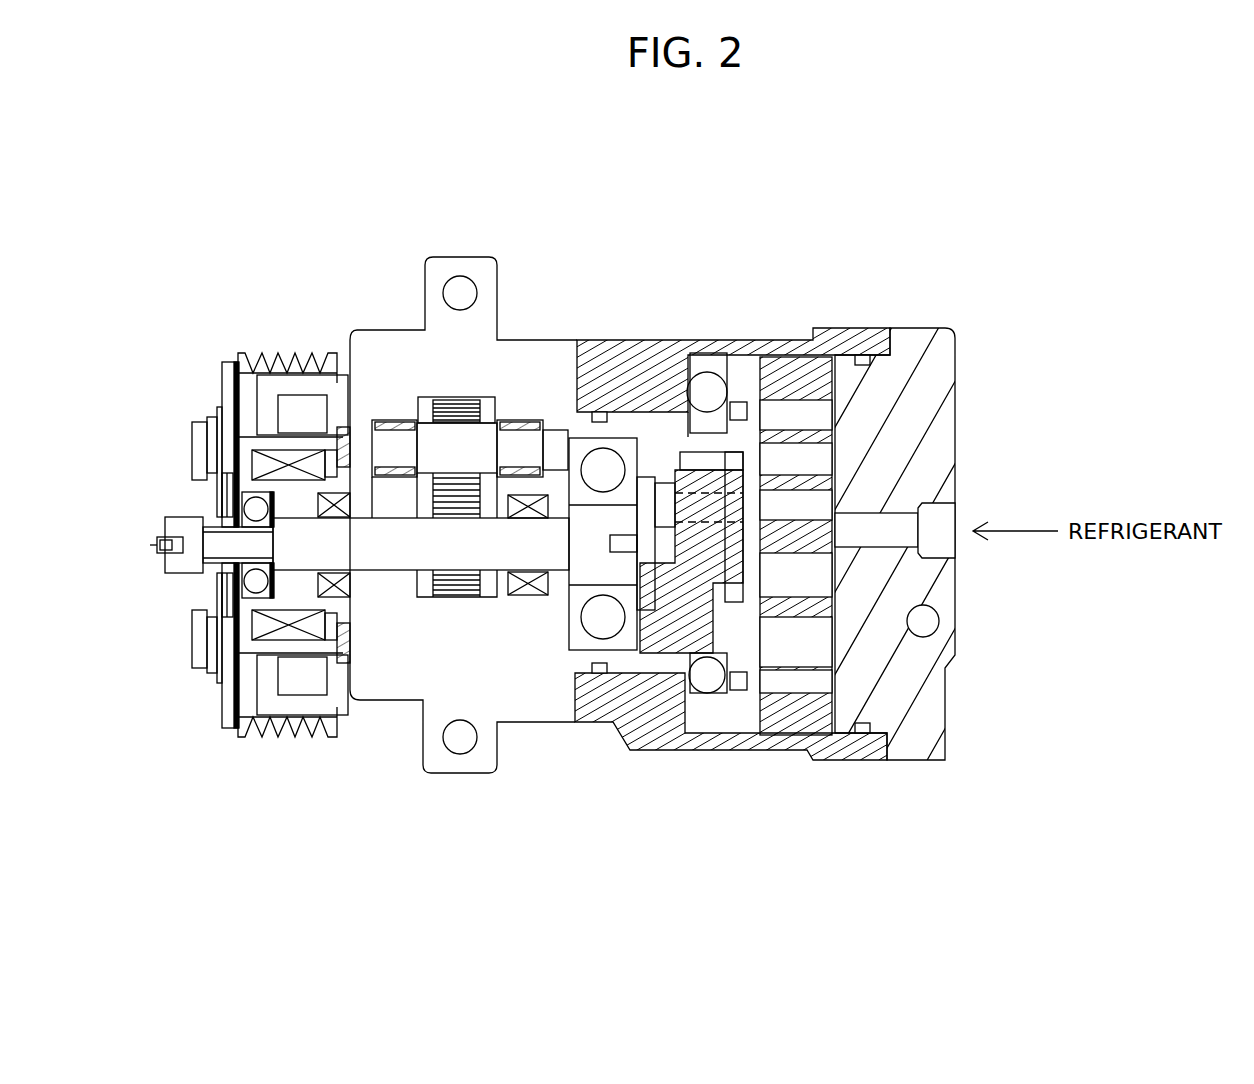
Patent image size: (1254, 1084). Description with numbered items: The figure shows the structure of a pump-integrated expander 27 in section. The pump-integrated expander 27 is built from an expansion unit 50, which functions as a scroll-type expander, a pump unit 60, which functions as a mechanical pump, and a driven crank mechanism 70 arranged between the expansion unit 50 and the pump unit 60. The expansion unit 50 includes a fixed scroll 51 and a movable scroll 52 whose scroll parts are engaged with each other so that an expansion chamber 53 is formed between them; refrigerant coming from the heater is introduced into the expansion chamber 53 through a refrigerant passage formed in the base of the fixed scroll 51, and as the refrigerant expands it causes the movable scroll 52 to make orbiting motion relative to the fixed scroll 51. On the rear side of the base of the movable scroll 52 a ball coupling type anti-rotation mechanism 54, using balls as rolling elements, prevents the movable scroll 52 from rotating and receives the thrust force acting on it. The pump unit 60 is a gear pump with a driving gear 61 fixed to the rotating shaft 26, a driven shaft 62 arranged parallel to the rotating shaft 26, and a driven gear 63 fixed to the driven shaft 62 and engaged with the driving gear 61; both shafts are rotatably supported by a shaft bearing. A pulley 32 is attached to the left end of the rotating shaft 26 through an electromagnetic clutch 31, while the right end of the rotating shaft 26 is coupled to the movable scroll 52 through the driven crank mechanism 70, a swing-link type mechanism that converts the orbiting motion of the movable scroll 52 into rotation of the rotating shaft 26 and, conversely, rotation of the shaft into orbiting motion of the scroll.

The pump-integrated expander 27 is at (745, 188).
The rotating shaft 26 is at (387, 550).
The electromagnetic clutch 31 is at (250, 577).
The pulley 32 is at (300, 737).
The expansion unit 50 is at (863, 245).
The fixed scroll 51 is at (850, 372).
The movable scroll 52 is at (762, 378).
The expansion chamber 53 is at (835, 512).
The anti-rotation mechanism 54 is at (676, 362).
The pump unit 60 is at (392, 242).
The driving gear 61 is at (457, 592).
The driven shaft 62 is at (383, 443).
The driven gear 63 is at (432, 412).
The driven crank mechanism 70 is at (655, 462).